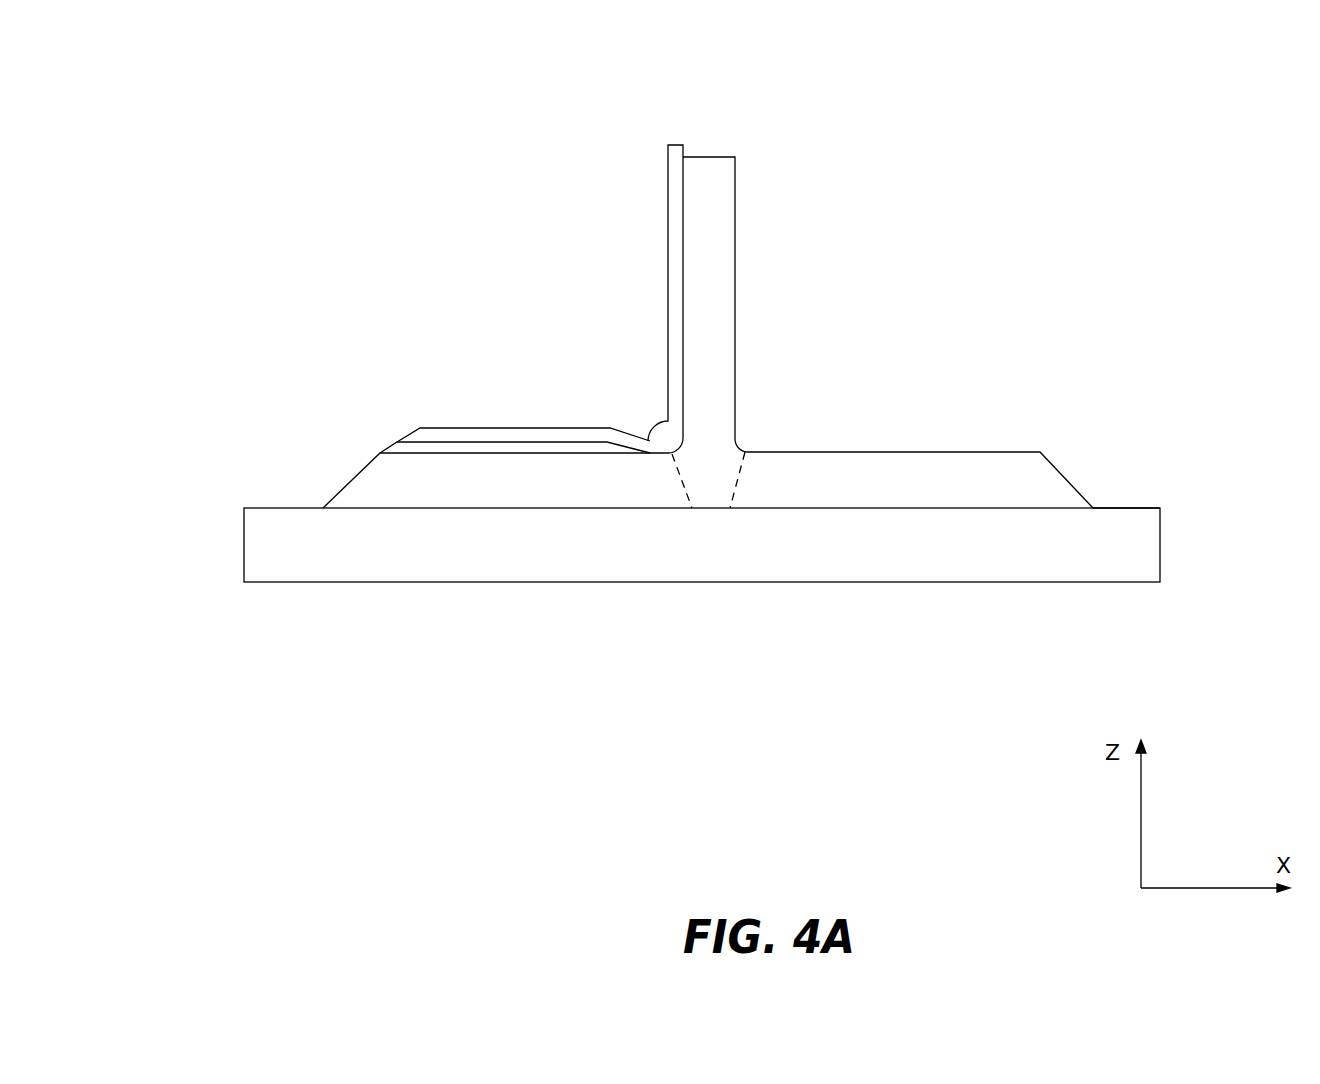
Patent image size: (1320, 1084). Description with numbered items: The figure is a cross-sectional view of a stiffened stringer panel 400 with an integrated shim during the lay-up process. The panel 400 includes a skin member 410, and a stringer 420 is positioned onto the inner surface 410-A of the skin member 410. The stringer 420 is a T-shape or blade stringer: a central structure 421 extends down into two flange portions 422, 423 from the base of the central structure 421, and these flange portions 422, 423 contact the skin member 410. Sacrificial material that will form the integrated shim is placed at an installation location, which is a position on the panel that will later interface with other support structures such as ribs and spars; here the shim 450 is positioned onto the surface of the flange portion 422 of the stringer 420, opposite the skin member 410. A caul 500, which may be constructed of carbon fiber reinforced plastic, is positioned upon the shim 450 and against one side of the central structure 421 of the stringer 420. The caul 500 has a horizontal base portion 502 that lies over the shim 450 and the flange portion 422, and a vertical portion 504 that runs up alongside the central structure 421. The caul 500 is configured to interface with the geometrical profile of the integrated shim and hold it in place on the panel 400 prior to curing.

The panel 400 is at (218, 131).
The skin member 410 is at (265, 552).
The inner surface 410-A is at (1126, 487).
The stringer 420 is at (666, 306).
The central structure 421 is at (720, 296).
The flange portion 422 is at (373, 479).
The flange portion 423 is at (953, 470).
The shim 450 is at (393, 447).
The caul 500 is at (540, 288).
The horizontal base portion 502 is at (515, 428).
The vertical portion 504 is at (672, 198).